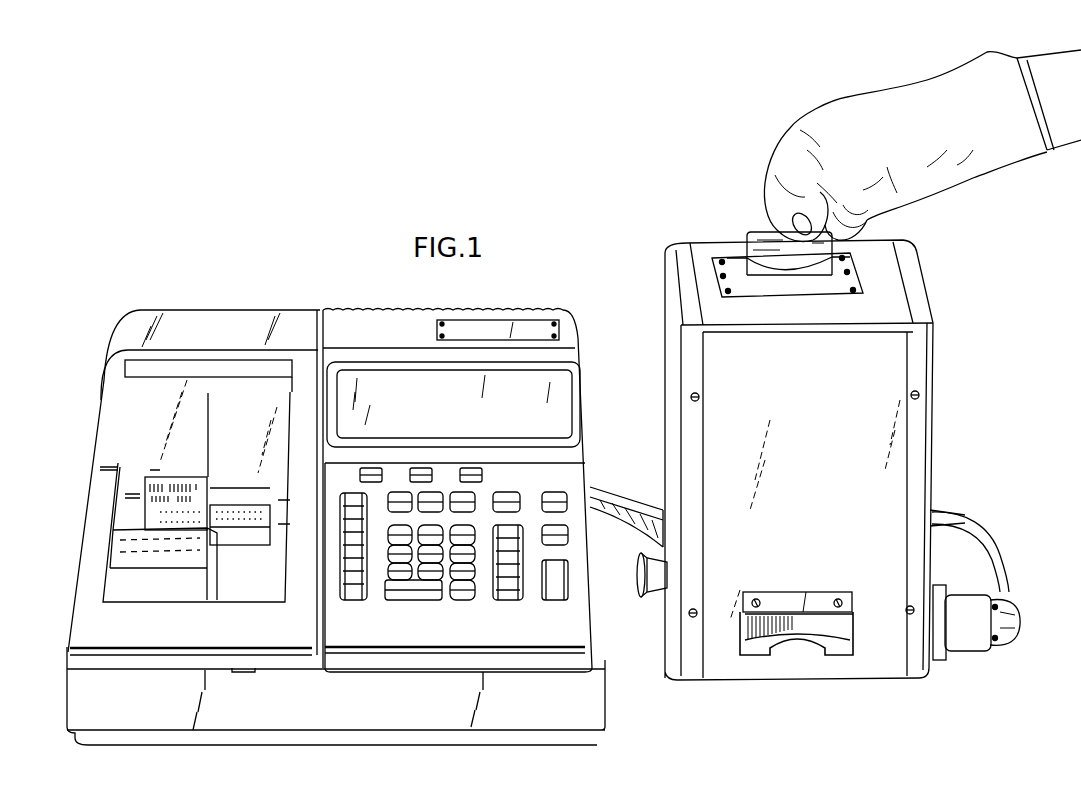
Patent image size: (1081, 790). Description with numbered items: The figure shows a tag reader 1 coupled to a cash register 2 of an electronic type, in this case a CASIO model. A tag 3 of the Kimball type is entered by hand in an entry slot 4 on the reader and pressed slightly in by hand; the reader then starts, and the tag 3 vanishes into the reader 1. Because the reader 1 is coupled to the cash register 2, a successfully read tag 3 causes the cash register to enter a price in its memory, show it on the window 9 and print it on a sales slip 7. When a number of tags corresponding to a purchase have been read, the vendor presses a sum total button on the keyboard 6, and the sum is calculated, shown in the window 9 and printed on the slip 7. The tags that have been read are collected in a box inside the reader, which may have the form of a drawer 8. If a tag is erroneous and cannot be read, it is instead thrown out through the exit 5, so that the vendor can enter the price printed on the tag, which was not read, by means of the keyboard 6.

The tag reader 1 is at (933, 360).
The cash register 2 is at (197, 309).
The tag 3 is at (760, 236).
The entry slot 4 is at (758, 280).
The exit 5 is at (850, 628).
The keyboard 6 is at (474, 636).
The sales slip 7 is at (150, 478).
The drawer 8 is at (660, 600).
The window 9 is at (430, 404).